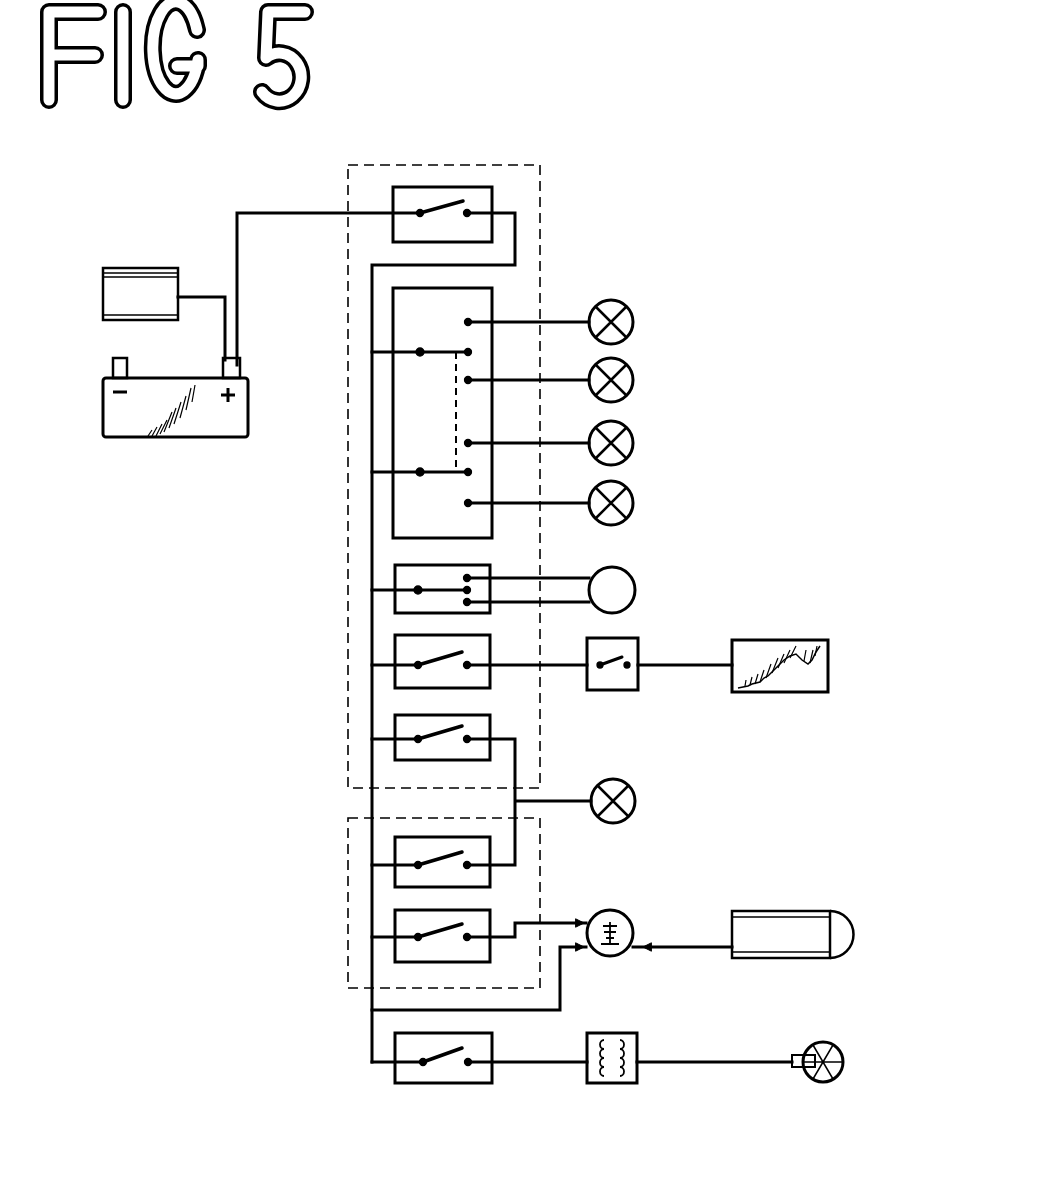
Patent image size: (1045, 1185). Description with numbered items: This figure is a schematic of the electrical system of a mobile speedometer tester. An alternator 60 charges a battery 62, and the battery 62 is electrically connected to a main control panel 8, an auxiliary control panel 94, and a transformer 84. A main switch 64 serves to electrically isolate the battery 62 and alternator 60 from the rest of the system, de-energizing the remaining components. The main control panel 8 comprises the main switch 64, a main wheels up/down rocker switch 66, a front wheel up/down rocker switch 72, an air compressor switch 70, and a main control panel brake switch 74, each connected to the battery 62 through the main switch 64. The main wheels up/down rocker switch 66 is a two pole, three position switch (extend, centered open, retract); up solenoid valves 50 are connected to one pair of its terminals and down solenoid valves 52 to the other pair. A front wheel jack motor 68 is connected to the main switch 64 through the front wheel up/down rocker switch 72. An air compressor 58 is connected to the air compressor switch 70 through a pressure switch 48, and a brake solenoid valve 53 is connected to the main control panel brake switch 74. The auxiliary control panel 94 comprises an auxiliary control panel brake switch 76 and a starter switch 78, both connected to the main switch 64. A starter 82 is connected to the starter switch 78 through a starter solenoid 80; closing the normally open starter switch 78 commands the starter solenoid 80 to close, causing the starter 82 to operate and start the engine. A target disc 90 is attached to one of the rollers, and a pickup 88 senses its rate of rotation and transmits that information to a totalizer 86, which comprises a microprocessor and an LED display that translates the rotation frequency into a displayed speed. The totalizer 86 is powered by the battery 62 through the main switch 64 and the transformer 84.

The main control panel 8 is at (448, 163).
The pressure switch 48 is at (616, 690).
The up solenoid valves 50 is at (633, 322).
The down solenoid valves 52 is at (633, 380).
The brake solenoid valve 53 is at (635, 800).
The air compressor 58 is at (772, 692).
The alternator 60 is at (140, 270).
The battery 62 is at (135, 438).
The main switch 64 is at (492, 200).
The main wheels up/down rocker switch 66 is at (493, 302).
The front wheel jack motor 68 is at (635, 590).
The air compressor switch 70 is at (395, 643).
The front wheel up/down rocker switch 72 is at (395, 575).
The main control panel brake switch 74 is at (395, 727).
The auxiliary control panel brake switch 76 is at (395, 847).
The starter switch 78 is at (395, 917).
The starter solenoid 80 is at (632, 920).
The starter 82 is at (800, 910).
The transformer 84 is at (395, 1070).
The totalizer 86 is at (587, 1075).
The pickup 88 is at (800, 1070).
The target disc 90 is at (835, 1045).
The auxiliary control panel 94 is at (543, 875).